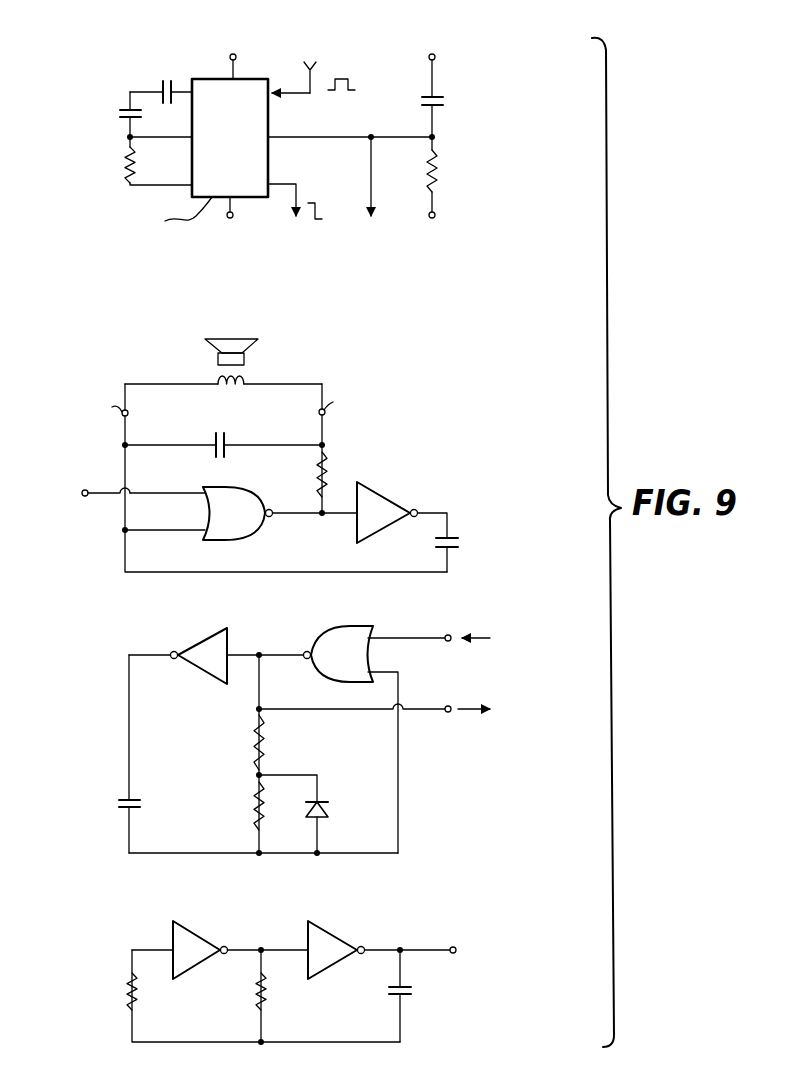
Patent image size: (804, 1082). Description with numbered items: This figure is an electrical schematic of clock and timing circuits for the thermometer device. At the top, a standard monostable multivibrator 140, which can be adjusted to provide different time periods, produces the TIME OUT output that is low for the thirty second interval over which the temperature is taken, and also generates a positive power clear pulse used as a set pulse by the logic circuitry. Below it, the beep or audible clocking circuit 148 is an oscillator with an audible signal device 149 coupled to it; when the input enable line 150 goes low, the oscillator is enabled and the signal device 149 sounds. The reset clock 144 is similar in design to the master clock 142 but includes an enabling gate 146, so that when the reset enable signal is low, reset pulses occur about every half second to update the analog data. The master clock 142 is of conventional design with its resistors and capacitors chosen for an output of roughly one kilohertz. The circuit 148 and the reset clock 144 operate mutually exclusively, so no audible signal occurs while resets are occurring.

The monostable multivibrator 140 is at (232, 147).
The master clock 142 is at (349, 1016).
The reset clock 144 is at (202, 763).
The enabling gate 146 is at (355, 667).
The clocking circuit 148 is at (293, 478).
The audible signal device 149 is at (216, 349).
The input enable line 150 is at (119, 493).